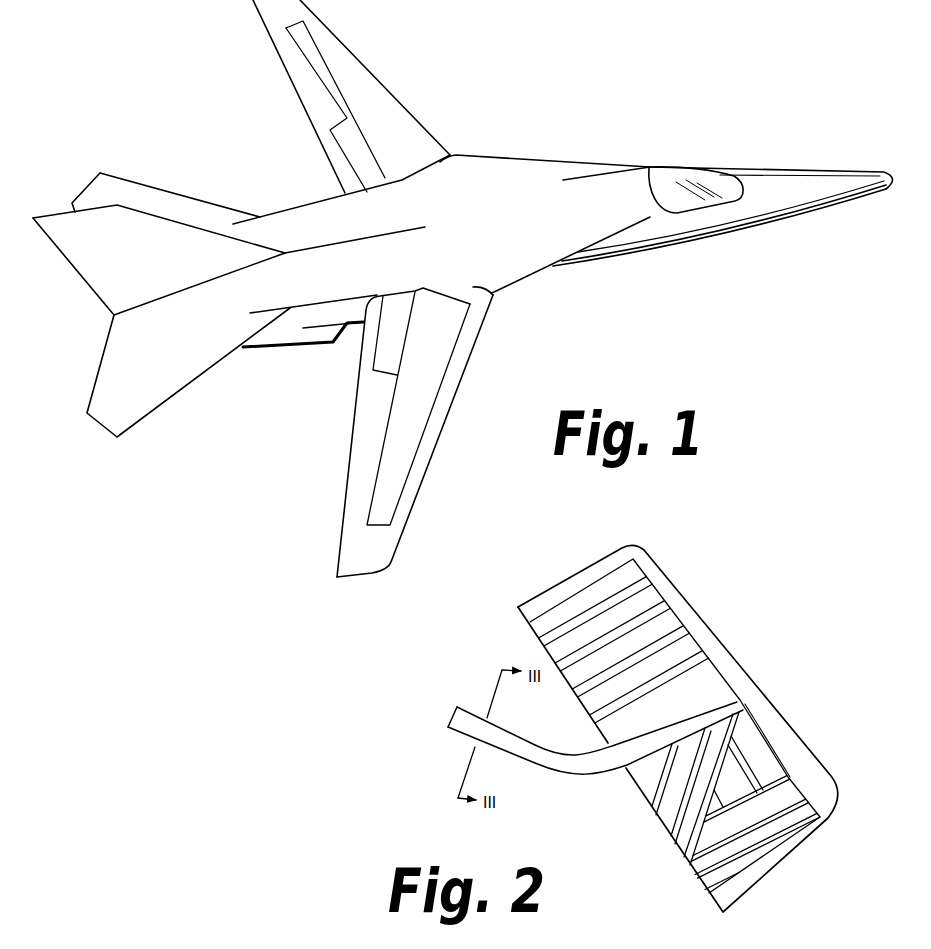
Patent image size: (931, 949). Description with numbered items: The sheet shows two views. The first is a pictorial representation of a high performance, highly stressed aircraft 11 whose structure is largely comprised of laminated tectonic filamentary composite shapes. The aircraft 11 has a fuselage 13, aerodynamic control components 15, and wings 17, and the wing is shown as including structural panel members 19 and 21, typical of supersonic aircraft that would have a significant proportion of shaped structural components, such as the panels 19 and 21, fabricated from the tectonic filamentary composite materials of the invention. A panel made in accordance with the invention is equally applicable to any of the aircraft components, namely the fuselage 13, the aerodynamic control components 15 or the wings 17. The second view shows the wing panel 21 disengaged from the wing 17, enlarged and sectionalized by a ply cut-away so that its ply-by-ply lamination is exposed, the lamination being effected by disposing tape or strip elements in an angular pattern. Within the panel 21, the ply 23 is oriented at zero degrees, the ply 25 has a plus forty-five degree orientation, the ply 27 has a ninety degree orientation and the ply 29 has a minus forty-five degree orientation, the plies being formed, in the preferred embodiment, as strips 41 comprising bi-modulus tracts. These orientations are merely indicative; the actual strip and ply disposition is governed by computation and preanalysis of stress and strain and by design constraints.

In FIG. 1, the aircraft 11 is at (522, 141).
In FIG. 1, the fuselage 13 is at (684, 229).
In FIG. 1, the aerodynamic control components 15 is at (81, 351).
In FIG. 1, the wings 17 is at (418, 478).
In FIG. 1, the structural panel member 19 is at (425, 386).
In FIG. 1, the wing panel 21 is at (399, 335).
In FIG. 2, the wing panel 21 is at (773, 671).
In FIG. 2, the ply 23 is at (657, 710).
In FIG. 2, the ply 25 is at (685, 778).
In FIG. 2, the ply 27 is at (750, 765).
In FIG. 2, the ply 29 is at (736, 839).
In FIG. 2, the strips 41 is at (579, 782).